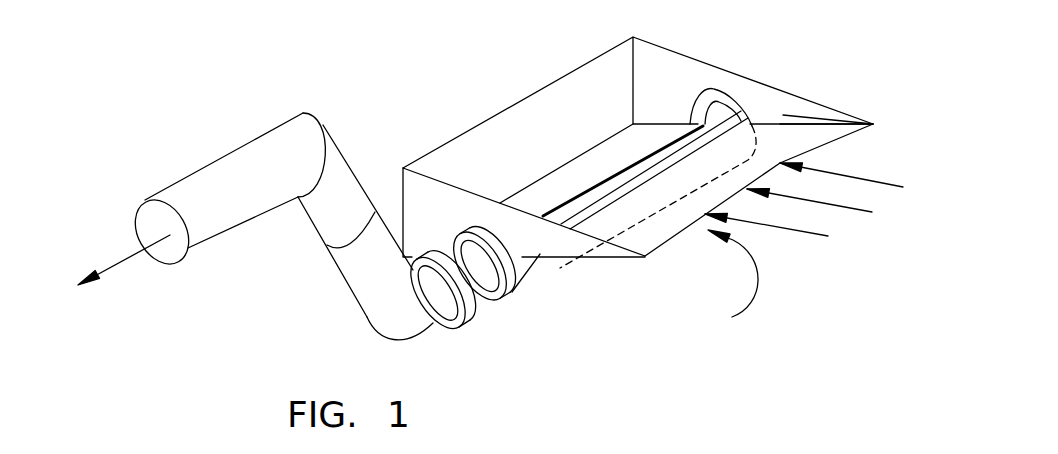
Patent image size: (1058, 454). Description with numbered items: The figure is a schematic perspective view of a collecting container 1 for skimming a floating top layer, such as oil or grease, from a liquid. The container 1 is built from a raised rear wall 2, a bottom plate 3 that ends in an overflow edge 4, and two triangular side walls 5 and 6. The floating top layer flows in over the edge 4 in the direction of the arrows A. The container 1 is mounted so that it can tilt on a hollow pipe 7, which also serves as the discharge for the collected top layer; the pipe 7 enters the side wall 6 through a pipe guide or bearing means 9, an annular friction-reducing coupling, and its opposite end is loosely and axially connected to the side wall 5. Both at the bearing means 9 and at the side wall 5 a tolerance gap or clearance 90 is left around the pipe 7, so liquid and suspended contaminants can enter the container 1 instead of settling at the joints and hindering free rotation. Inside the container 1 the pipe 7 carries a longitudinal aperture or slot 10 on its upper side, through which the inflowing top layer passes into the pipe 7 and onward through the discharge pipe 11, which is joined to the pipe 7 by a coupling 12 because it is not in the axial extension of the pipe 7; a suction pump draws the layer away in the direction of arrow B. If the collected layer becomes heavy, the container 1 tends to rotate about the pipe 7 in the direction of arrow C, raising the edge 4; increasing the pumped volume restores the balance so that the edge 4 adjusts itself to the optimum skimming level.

The collecting container 1 is at (544, 42).
The raised rear wall 2 is at (512, 128).
The bottom plate 3 is at (655, 227).
The overflow edge 4 is at (820, 146).
The triangular side wall 5 is at (783, 115).
The triangular side wall 6 is at (404, 170).
The hollow pipe 7 is at (435, 297).
The pipe guide or bearing means 9 is at (521, 267).
The aperture or slot 10 is at (683, 143).
The discharge pipe 11 is at (257, 192).
The coupling 12 is at (343, 260).
The tolerance gap or clearance 90 is at (703, 126).
The arrows A is at (804, 206).
The arrow B is at (105, 277).
The arrow C is at (729, 288).